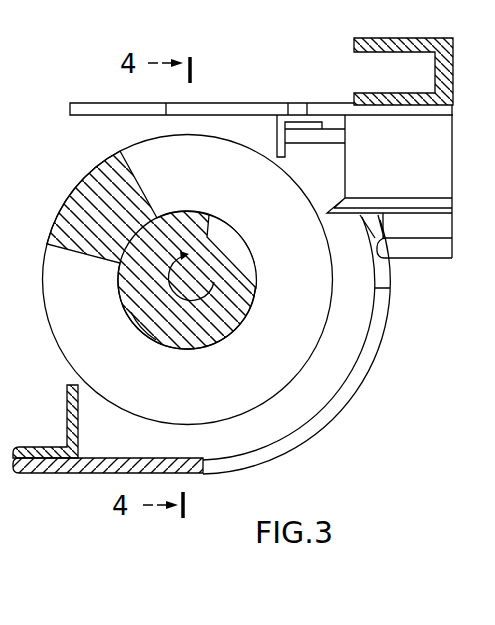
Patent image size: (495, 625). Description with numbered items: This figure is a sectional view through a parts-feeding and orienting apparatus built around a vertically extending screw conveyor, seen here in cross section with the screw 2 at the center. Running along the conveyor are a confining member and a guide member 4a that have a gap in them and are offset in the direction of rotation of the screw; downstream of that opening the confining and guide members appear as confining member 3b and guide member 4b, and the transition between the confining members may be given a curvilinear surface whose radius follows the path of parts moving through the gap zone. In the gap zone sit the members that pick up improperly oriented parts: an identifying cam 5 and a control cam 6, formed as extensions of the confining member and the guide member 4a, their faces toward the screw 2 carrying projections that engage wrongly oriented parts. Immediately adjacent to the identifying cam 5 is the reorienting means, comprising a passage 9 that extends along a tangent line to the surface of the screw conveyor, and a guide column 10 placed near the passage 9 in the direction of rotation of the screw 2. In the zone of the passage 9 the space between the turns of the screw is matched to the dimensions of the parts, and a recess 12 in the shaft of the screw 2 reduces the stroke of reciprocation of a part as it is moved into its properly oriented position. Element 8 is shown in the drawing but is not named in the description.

The screw 2 is at (278, 385).
The confining member 3b is at (366, 353).
The guide member 4a is at (292, 116).
The guide member 4b is at (66, 402).
The identifying cam 5 is at (310, 141).
The control cam 6 is at (220, 102).
The side wall 8 is at (458, 207).
The passage 9 is at (442, 140).
The guide column 10 is at (390, 247).
The recess 12 is at (248, 272).